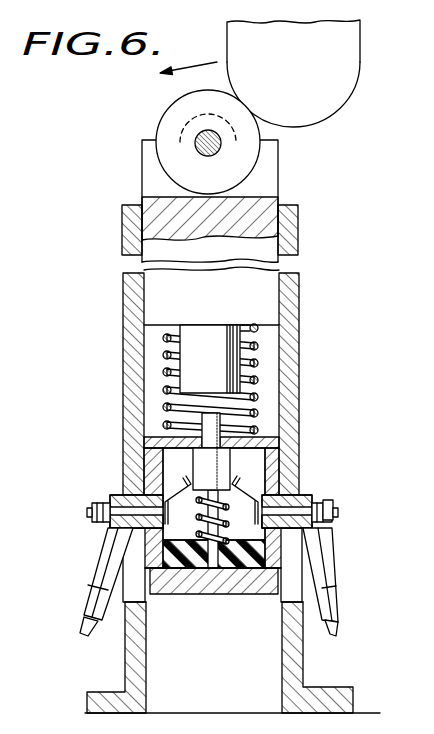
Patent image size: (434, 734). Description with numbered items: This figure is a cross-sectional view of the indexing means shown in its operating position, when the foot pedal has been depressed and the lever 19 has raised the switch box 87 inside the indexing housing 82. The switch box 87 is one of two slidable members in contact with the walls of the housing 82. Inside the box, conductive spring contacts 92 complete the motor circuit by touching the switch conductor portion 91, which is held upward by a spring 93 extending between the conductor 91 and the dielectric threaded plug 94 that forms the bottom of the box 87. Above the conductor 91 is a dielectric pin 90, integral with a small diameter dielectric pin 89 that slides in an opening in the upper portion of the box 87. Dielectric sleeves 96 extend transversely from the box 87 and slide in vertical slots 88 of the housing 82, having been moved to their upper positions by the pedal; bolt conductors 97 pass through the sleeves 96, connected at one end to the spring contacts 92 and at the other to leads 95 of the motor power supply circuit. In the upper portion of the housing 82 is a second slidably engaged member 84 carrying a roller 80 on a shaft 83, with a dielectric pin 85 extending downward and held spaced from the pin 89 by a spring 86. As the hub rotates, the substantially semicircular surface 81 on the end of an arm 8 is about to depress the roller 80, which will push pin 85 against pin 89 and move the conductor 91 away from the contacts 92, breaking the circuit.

The arm 8 is at (321, 73).
The substantially semicircular surface 81 is at (340, 88).
The roller 80 is at (172, 142).
The shaft 83 is at (166, 118).
The slidably engaged member 84 is at (262, 181).
The housing 82 is at (293, 335).
The dielectric pin 85 is at (243, 377).
The spring 86 is at (258, 414).
The small diameter dielectric pin 89 is at (202, 420).
The switch conductor portion 91 is at (213, 480).
The dielectric pin 90 is at (193, 465).
The conductive spring contacts 92 is at (320, 458).
The switch box 87 is at (282, 485).
The bolt conductors 97 is at (90, 513).
The dielectric sleeves 96 is at (133, 533).
The leads 95 is at (86, 602).
The spring 93 is at (230, 571).
The dielectric threaded plug 94 is at (200, 570).
The vertical slots 88 is at (143, 598).
The lever 19 is at (272, 582).